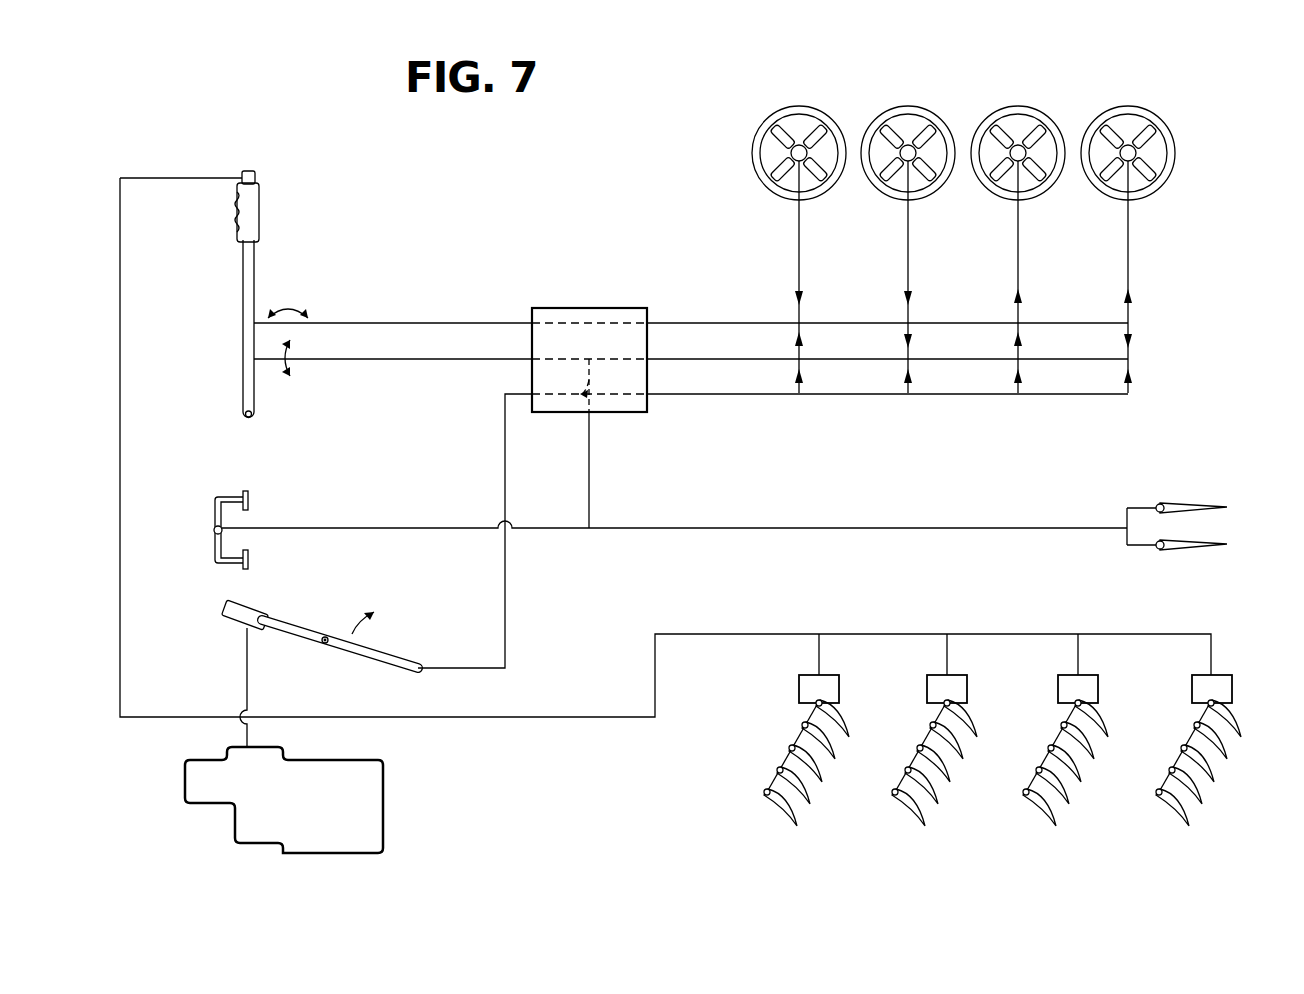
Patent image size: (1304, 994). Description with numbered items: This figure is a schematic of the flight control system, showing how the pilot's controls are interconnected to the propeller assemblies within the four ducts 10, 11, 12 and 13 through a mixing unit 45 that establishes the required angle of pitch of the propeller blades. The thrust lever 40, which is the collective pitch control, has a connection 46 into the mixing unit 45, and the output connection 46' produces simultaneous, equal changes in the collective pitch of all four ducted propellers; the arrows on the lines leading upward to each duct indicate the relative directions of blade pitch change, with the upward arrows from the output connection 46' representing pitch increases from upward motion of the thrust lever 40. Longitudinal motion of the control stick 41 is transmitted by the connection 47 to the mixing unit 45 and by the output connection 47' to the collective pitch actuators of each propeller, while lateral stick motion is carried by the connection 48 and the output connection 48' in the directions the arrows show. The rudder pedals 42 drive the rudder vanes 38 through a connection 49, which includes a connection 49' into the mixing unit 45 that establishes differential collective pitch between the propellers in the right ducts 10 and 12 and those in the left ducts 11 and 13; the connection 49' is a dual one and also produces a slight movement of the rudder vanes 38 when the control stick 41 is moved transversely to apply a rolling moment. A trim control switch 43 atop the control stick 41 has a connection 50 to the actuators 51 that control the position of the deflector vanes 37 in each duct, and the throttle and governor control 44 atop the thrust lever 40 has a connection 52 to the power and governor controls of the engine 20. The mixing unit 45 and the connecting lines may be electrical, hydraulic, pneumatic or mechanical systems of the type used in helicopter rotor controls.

The duct 10 is at (816, 84).
The duct 11 is at (919, 109).
The duct 12 is at (1029, 109).
The duct 13 is at (1141, 109).
The engine 20 is at (298, 812).
The deflector vanes 37 is at (776, 807).
The rudder vanes 38 is at (1225, 540).
The thrust lever 40 is at (306, 633).
The control stick 41 is at (243, 276).
The rudder pedals 42 is at (248, 497).
The trim control switch 43 is at (252, 171).
The throttle and governor control 44 is at (252, 605).
The mixing unit 45 is at (620, 308).
The connection 46 is at (475, 531).
The output connection 46' is at (887, 413).
The connection 47 is at (393, 305).
The output connection 47' is at (887, 305).
The connection 48 is at (393, 345).
The output connection 48' is at (887, 345).
The connection 49 is at (674, 509).
The connection 49' is at (603, 443).
The connection 50 is at (508, 718).
The actuators 51 is at (836, 695).
The connection 52 is at (247, 690).